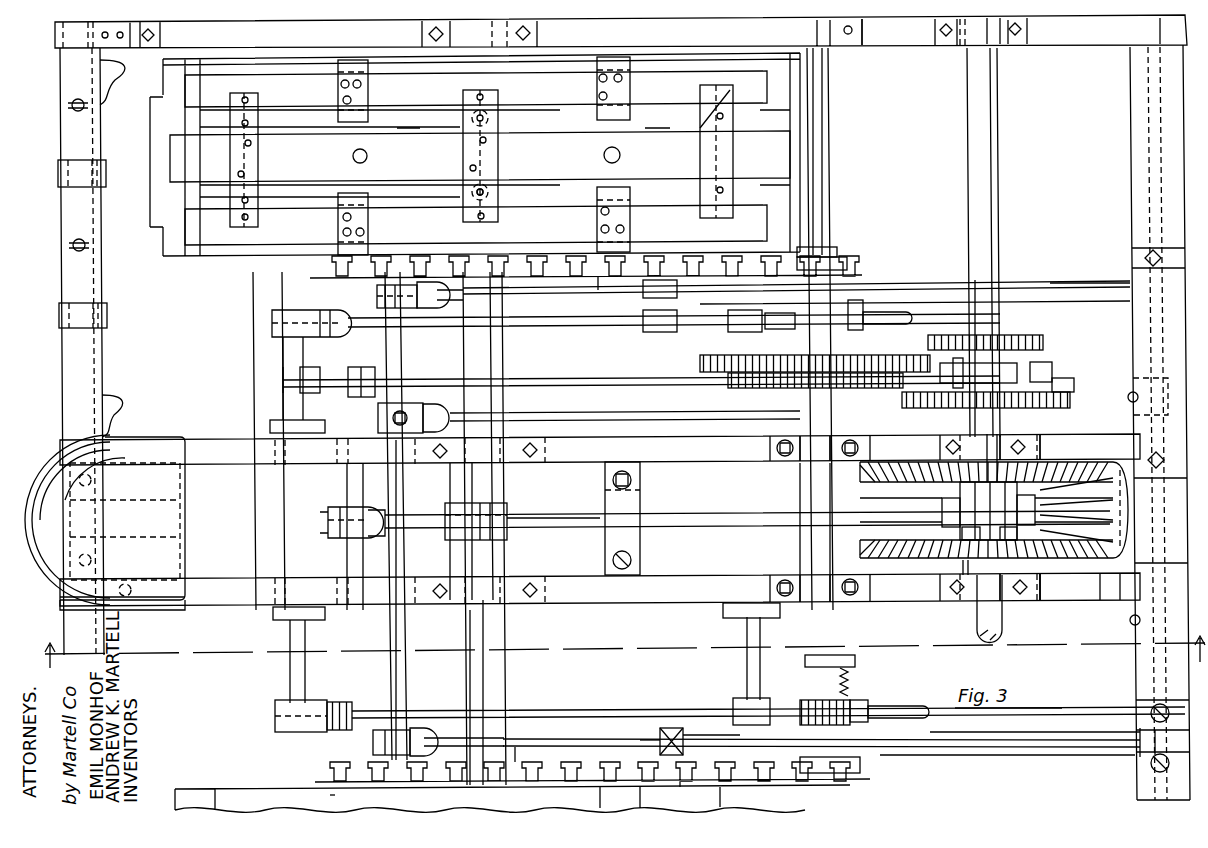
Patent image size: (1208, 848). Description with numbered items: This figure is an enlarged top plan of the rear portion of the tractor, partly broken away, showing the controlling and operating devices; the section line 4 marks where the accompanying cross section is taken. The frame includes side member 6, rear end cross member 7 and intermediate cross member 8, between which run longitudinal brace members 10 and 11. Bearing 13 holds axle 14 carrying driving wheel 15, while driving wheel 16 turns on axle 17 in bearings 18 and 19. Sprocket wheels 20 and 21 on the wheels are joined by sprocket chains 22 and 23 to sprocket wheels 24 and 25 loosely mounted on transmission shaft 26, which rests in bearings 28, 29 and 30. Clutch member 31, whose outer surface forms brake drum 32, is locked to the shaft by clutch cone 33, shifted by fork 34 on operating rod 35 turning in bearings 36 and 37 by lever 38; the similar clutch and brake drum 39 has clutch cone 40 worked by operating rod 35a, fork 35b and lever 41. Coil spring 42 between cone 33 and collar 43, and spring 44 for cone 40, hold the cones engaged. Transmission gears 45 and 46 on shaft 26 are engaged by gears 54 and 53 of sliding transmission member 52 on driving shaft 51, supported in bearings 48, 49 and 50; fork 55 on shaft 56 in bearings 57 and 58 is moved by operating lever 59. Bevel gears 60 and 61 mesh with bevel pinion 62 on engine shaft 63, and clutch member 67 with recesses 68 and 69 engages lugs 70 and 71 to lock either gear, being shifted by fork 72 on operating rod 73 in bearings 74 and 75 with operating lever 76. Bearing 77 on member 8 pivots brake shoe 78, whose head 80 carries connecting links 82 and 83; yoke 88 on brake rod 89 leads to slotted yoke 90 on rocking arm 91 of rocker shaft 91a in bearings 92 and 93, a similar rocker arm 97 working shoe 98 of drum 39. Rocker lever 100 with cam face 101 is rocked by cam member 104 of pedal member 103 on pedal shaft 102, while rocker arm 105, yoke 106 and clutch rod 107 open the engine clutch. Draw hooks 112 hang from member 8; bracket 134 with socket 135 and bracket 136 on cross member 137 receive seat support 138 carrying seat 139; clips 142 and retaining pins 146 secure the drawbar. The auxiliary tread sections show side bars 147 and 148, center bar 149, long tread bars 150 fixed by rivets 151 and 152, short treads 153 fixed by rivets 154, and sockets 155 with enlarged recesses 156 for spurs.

The section line 4 is at (622, 655).
The side member 6 is at (1100, 40).
The rear end cross member 7 is at (70, 212).
The intermediate cross member 8 is at (1130, 112).
The longitudinal brace member 10 is at (1110, 590).
The longitudinal brace member 11 is at (1105, 430).
The bearing 13 is at (525, 605).
The axle 14 is at (506, 672).
The driving wheel 15 is at (228, 789).
The driving wheel 16 is at (215, 272).
The axle 17 is at (502, 340).
The bearing 18 is at (548, 448).
The bearing 19 is at (540, 33).
The sprocket wheel 20 is at (475, 772).
The sprocket wheel 21 is at (525, 285).
The sprocket chain 22 is at (575, 745).
The sprocket chain 23 is at (600, 292).
The sprocket wheel 24 is at (862, 770).
The sprocket wheel 25 is at (825, 250).
The transmission shaft 26 is at (828, 155).
The bearing 28 is at (872, 588).
The bearing 29 is at (872, 447).
The bearing 30 is at (875, 45).
The clutch member 31 is at (930, 705).
The brake drum 32 is at (960, 730).
The clutch cone 33 is at (880, 720).
The fork 34 is at (860, 698).
The operating rod 35 is at (675, 728).
The operating rod 35a is at (668, 332).
The fork 35b is at (855, 283).
The bearing 36 is at (750, 630).
The bearing 37 is at (305, 668).
The operating lever 38 is at (345, 702).
The clutch and brake drum 39 is at (915, 280).
The clutch cone 40 is at (857, 330).
The lever 41 is at (360, 367).
The coil spring 42 is at (800, 682).
The collar 43 is at (850, 655).
The spring 44 is at (800, 345).
The transmission gear 45 is at (728, 385).
The transmission gear 46 is at (700, 362).
The bearing 48 is at (1040, 587).
The bearing 49 is at (1045, 447).
The bearing 50 is at (1030, 30).
The driving shaft 51 is at (1002, 620).
The sliding transmission member 52 is at (1017, 365).
The gear 53 is at (1043, 338).
The gear 54 is at (1070, 400).
The fork 55 is at (1052, 370).
The shaft 56 is at (600, 378).
The bearing 57 is at (283, 380).
The bearing 58 is at (1074, 385).
The operating lever 59 is at (400, 336).
The bevel gear 60 is at (1080, 465).
The bevel gear 61 is at (880, 540).
The bevel pinion 62 is at (1073, 587).
The engine shaft 63 is at (1121, 584).
The clutch member 67 is at (962, 535).
The recess 68 is at (1030, 495).
The recess 69 is at (1017, 534).
The teeth or lugs 70 is at (960, 492).
The teeth or lugs 71 is at (965, 578).
The fork 72 is at (942, 505).
The operating rod 73 is at (762, 510).
The bearing 74 is at (475, 540).
The bearing 75 is at (1127, 502).
The operating lever 76 is at (505, 508).
The bearing 77 is at (1140, 705).
The brake shoe 78 is at (1140, 758).
The head 80 is at (690, 728).
The connecting link 82 is at (660, 735).
The connecting link 83 is at (685, 778).
The yoke 88 is at (660, 730).
The brake rod 89 is at (540, 738).
The yoke 90 is at (440, 728).
The rocking arm 91 is at (400, 730).
The rocker shaft 91a is at (405, 625).
The bearing 92 is at (445, 583).
The bearing 93 is at (440, 462).
The rocker arm 97 is at (377, 296).
The brake shoe 98 is at (1078, 280).
The rocker lever 100 is at (385, 530).
The cam face 101 is at (365, 537).
The pedal shaft 102 is at (347, 486).
The pedal member 103 is at (330, 512).
The cam member 104 is at (342, 535).
The rocker arm 105 is at (378, 423).
The yoke 106 is at (440, 412).
The clutch rod 107 is at (605, 415).
The draw hook 112 is at (1132, 392).
The bracket 134 is at (50, 480).
The socket 135 is at (90, 500).
The bracket 136 is at (640, 492).
The cross member 137 is at (645, 558).
The seat or saddle support 138 is at (185, 490).
The seat or saddle 139 is at (185, 532).
The clip 142 is at (52, 45).
The retaining pin 146 is at (72, 108).
The side bar 147 is at (476, 225).
The side bar 148 is at (476, 89).
The center bar 149 is at (480, 156).
The long tread bar 150 is at (258, 158).
The rivet 151 is at (240, 174).
The rivet 152 is at (250, 100).
The short tread 153 is at (440, 105).
The rivet 154 is at (345, 215).
The socket 155 is at (345, 80).
The enlarged recess 156 is at (604, 74).